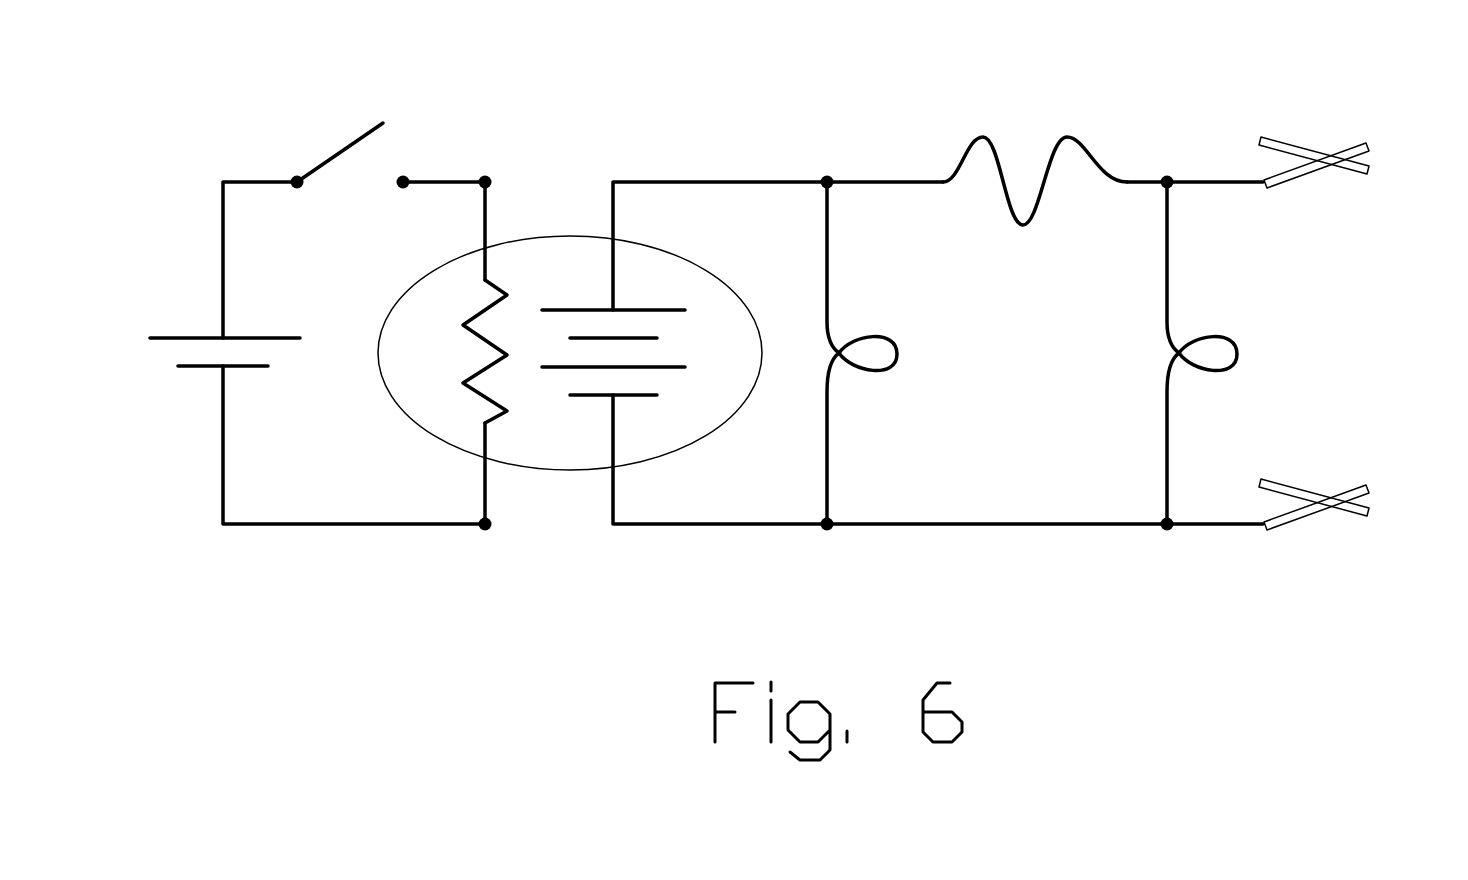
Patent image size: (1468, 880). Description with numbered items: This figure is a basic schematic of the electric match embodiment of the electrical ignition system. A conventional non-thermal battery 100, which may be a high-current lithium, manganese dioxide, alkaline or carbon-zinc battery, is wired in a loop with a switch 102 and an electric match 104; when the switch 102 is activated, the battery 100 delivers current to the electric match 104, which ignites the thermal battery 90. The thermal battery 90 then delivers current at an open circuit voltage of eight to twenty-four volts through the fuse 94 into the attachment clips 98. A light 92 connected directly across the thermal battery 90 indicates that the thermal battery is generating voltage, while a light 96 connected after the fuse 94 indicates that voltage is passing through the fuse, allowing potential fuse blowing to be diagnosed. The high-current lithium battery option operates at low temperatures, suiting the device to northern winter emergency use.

The thermal battery 90 is at (673, 393).
The light 92 is at (898, 385).
The fuse 94 is at (1012, 132).
The light 96 is at (1162, 348).
The attachment clips 98 is at (1322, 472).
The non-thermal battery 100 is at (243, 380).
The switch 102 is at (400, 137).
The electric match 104 is at (473, 410).